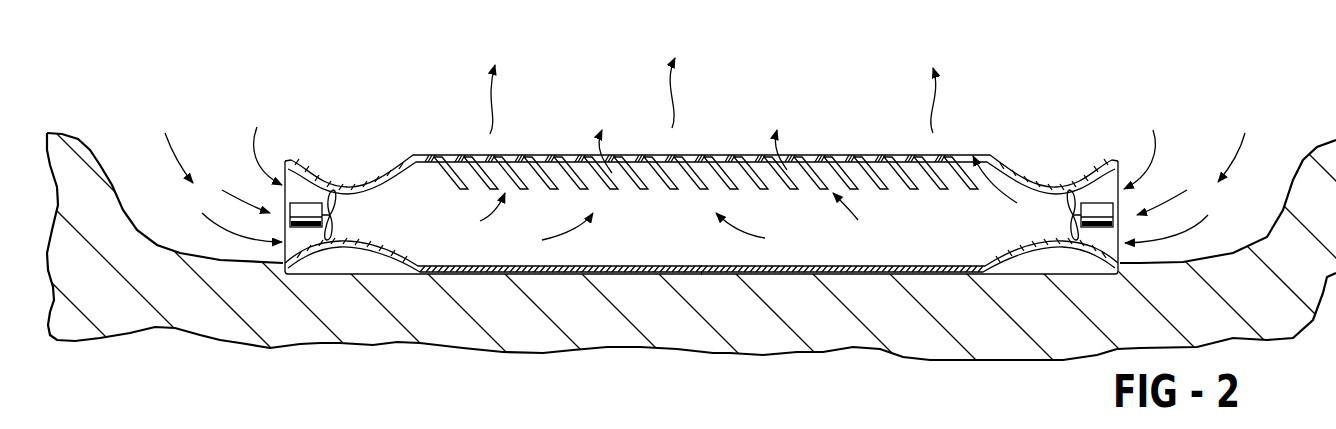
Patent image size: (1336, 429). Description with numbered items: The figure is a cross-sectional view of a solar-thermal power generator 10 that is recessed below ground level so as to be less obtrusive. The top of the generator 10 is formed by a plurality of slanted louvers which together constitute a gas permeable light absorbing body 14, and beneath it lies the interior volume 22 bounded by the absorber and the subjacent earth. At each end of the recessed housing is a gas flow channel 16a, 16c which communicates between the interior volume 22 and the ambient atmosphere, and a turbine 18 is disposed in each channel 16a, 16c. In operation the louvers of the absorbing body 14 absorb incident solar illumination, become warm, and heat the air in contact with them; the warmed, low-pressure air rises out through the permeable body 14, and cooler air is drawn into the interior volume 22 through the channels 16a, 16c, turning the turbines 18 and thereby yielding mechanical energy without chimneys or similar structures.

The solar-thermal power generator 10 is at (580, 126).
The light absorbing body 14 is at (725, 171).
The gas flow channel 16a is at (1124, 186).
The gas flow channel 16c is at (281, 197).
The turbine 18 is at (336, 229).
The interior volume 22 is at (669, 241).